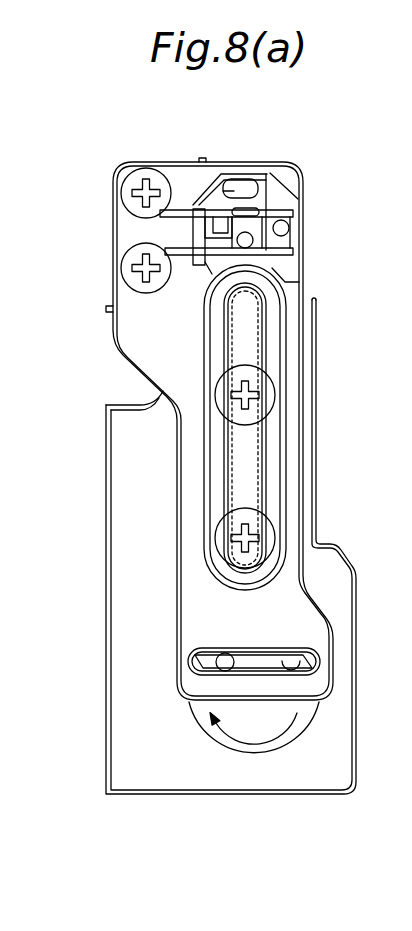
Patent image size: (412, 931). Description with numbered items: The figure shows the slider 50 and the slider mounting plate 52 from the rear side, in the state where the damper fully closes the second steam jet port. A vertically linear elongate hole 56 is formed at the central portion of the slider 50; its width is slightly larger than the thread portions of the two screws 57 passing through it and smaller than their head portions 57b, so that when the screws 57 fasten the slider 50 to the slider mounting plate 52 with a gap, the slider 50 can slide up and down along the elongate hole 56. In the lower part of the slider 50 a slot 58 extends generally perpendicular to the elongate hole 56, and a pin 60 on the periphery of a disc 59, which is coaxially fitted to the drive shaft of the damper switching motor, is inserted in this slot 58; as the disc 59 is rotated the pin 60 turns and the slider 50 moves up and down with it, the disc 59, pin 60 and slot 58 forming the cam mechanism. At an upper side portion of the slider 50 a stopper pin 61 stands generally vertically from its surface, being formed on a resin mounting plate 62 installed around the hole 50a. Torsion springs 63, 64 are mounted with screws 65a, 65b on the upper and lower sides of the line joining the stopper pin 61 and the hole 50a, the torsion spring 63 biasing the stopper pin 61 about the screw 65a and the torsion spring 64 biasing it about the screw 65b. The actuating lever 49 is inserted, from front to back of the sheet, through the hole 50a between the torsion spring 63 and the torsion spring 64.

The actuating lever 49 is at (253, 241).
The slider 50 is at (287, 163).
The hole 50a is at (241, 214).
The slider mounting plate 52 is at (104, 631).
The elongate hole 56 is at (253, 464).
The screw 57 is at (264, 378).
The head portion 57b is at (225, 375).
The slot 58 is at (283, 654).
The disc 59 is at (214, 757).
The pin 60 is at (222, 656).
The stopper pin 61 is at (284, 228).
The mounting plate 62 is at (303, 198).
The torsion spring 63 is at (184, 208).
The torsion spring 64 is at (183, 266).
The screw 65a is at (121, 190).
The screw 65b is at (122, 266).